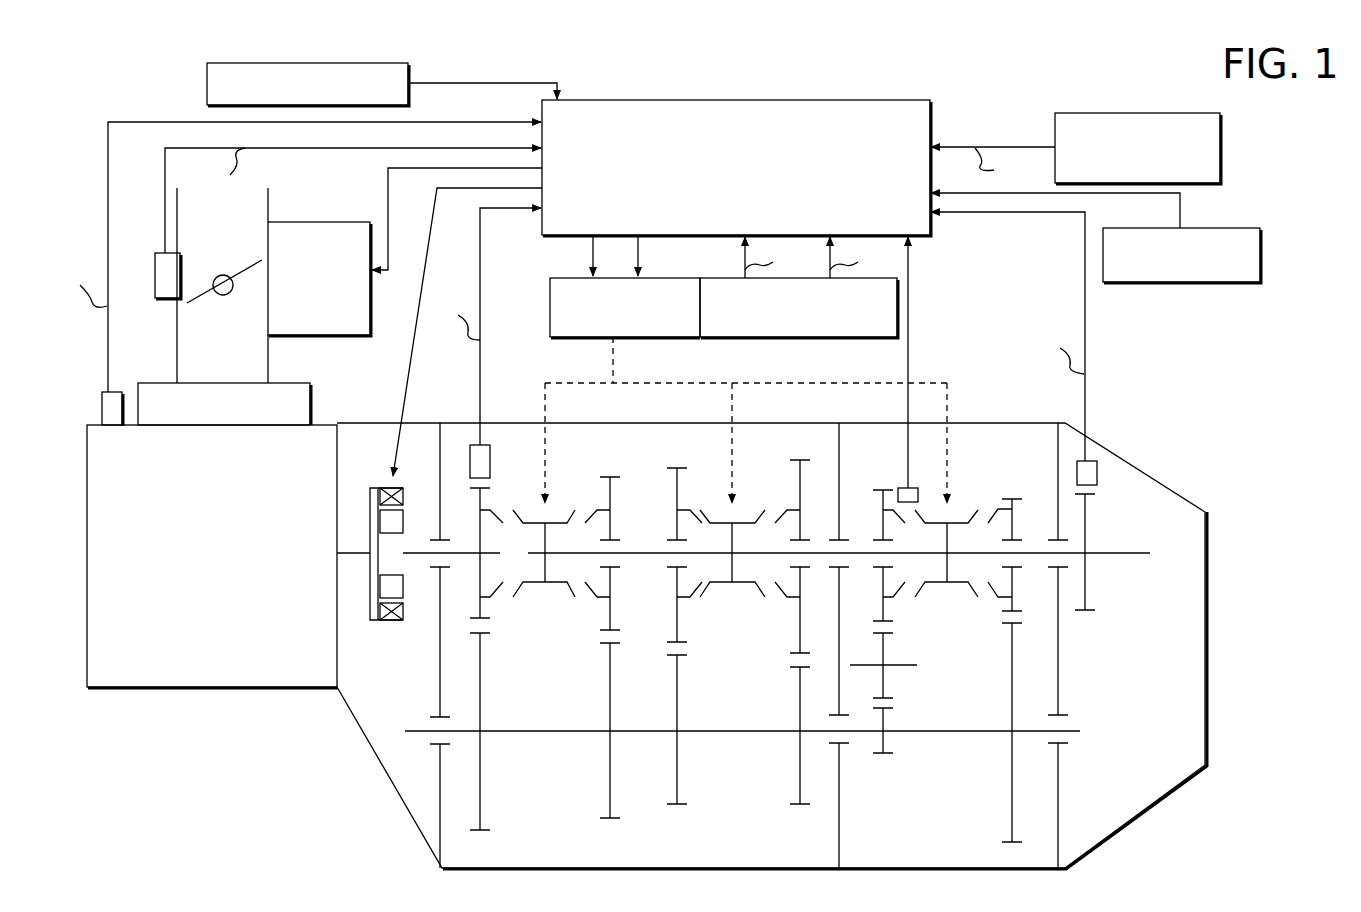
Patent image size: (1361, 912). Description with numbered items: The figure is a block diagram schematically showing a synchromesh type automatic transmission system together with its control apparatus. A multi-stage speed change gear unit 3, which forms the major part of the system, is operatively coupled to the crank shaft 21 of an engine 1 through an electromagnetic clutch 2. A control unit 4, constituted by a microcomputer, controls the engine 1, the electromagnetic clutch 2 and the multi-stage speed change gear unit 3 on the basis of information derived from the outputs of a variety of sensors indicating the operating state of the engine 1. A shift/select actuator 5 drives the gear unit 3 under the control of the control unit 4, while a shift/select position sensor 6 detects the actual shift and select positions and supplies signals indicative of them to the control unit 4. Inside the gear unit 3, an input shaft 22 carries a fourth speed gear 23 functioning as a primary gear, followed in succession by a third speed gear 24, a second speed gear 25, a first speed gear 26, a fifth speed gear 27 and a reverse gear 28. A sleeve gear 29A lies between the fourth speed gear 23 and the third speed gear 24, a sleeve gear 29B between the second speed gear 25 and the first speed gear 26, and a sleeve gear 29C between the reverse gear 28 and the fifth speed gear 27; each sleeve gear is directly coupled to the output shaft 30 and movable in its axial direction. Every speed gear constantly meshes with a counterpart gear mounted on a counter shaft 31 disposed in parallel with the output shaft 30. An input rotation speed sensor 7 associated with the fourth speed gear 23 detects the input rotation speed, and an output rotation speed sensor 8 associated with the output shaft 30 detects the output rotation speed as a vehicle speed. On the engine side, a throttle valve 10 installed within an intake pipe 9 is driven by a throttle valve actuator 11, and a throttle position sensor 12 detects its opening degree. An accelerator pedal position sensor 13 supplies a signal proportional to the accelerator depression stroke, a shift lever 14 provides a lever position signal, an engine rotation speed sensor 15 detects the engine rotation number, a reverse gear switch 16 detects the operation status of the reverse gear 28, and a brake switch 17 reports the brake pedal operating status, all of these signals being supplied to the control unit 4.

The engine 1 is at (210, 692).
The electromagnetic clutch 2 is at (386, 630).
The multi-stage speed change gear unit 3 is at (420, 847).
The control unit 4 is at (740, 100).
The shift/select actuator 5 is at (547, 310).
The shift/select position sensor 6 is at (900, 315).
The input rotation speed sensor 7 is at (488, 440).
The output rotation speed sensor 8 is at (1100, 469).
The intake pipe 9 is at (276, 211).
The throttle valve 10 is at (205, 305).
The throttle valve actuator 11 is at (332, 220).
The throttle position sensor 12 is at (148, 252).
The accelerator pedal position sensor 13 is at (1132, 113).
The shift lever 14 is at (1180, 282).
The engine rotation speed sensor 15 is at (101, 393).
The reverse gear switch 16 is at (920, 494).
The brake switch 17 is at (207, 83).
The crank shaft 21 is at (357, 550).
The input shaft 22 is at (420, 550).
The fourth speed gear 23 is at (465, 485).
The third speed gear 24 is at (612, 470).
The second speed gear 25 is at (677, 463).
The first speed gear 26 is at (804, 454).
The fifth speed gear 27 is at (1013, 495).
The reverse gear 28 is at (885, 486).
The sleeve gear 29A is at (560, 513).
The sleeve gear 29B is at (755, 502).
The sleeve gear 29C is at (970, 505).
The output shaft 30 is at (1122, 525).
The counter shaft 31 is at (562, 733).